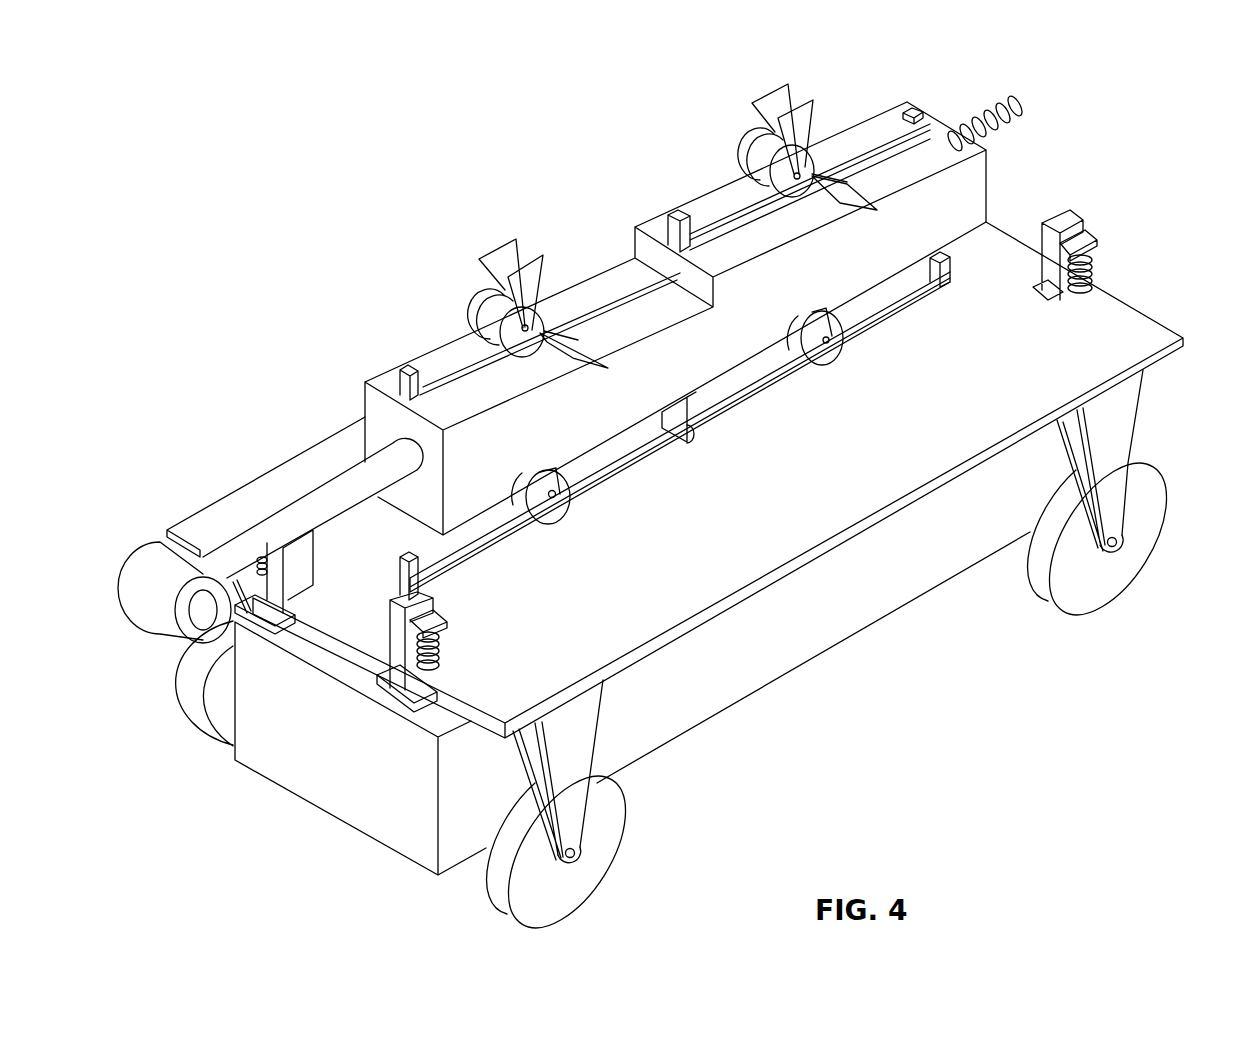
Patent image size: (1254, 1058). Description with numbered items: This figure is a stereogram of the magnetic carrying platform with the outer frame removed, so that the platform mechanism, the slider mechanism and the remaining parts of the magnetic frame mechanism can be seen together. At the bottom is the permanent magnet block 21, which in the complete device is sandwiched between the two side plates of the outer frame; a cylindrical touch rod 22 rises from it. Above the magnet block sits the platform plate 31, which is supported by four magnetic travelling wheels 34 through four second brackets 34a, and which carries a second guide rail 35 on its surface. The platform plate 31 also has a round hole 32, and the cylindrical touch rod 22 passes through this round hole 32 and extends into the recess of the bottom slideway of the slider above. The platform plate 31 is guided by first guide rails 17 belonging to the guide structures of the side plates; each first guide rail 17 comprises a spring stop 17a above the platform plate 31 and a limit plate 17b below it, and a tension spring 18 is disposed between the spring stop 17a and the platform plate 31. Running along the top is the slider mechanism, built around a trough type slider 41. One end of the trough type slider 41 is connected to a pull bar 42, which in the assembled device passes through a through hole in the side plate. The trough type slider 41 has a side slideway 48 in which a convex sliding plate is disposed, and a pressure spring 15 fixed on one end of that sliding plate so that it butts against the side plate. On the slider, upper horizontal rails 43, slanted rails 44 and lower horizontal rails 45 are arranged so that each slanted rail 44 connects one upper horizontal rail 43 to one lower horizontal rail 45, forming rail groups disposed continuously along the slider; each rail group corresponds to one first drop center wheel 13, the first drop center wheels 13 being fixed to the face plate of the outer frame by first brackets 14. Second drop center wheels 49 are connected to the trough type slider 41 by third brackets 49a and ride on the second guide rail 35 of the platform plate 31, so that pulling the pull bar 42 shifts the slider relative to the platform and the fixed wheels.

The first drop center wheels 13 is at (497, 315).
The first brackets 14 is at (500, 260).
The pressure spring 15 is at (1007, 105).
The first guide rails 17 is at (398, 637).
The spring stop 17a is at (1085, 243).
The limit plate 17b is at (398, 690).
The tension spring 18 is at (1092, 275).
The permanent magnet block 21 is at (813, 622).
The cylindrical touch rod 22 is at (680, 427).
The platform plate 31 is at (1120, 334).
The round hole 32 is at (695, 432).
The magnetic travelling wheels 34 is at (1150, 532).
The second brackets 34a is at (1112, 437).
The second guide rail 35 is at (757, 390).
The trough type slider 41 is at (385, 413).
The pull bar 42 is at (147, 577).
The upper horizontal rails 43 is at (730, 212).
The slanted rails 44 is at (813, 174).
The lower horizontal rails 45 is at (880, 152).
The side slideway 48 is at (922, 120).
The second drop center wheels 49 is at (837, 350).
The third brackets 49a is at (823, 330).